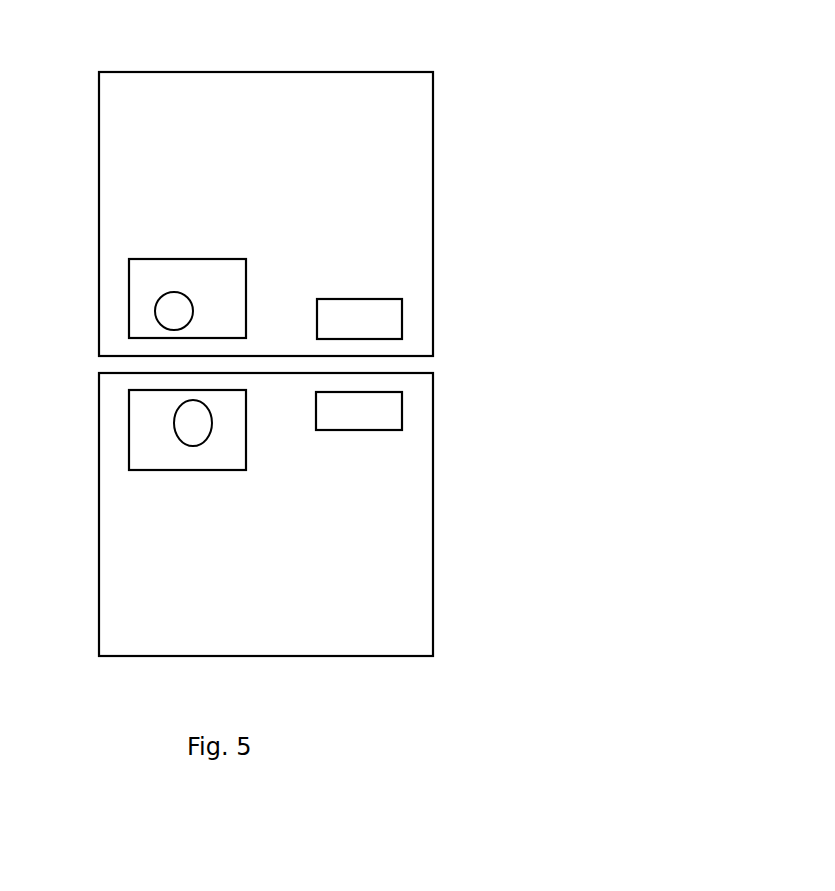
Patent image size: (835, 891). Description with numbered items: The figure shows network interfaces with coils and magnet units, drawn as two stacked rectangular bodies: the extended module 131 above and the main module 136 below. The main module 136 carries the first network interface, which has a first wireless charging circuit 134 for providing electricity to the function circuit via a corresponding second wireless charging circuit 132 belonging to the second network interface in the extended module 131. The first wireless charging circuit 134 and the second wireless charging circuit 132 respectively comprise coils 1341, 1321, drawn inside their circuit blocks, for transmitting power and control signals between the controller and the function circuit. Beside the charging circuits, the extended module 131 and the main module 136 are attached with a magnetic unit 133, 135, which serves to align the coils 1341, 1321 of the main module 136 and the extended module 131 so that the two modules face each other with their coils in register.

The extended module 131 is at (417, 76).
The second wireless charging circuit 132 is at (233, 285).
The coil 1321 is at (167, 310).
The magnetic unit 133 is at (387, 325).
The first wireless charging circuit 134 is at (197, 467).
The coil 1341 is at (192, 426).
The magnetic unit 135 is at (345, 427).
The main module 136 is at (433, 478).